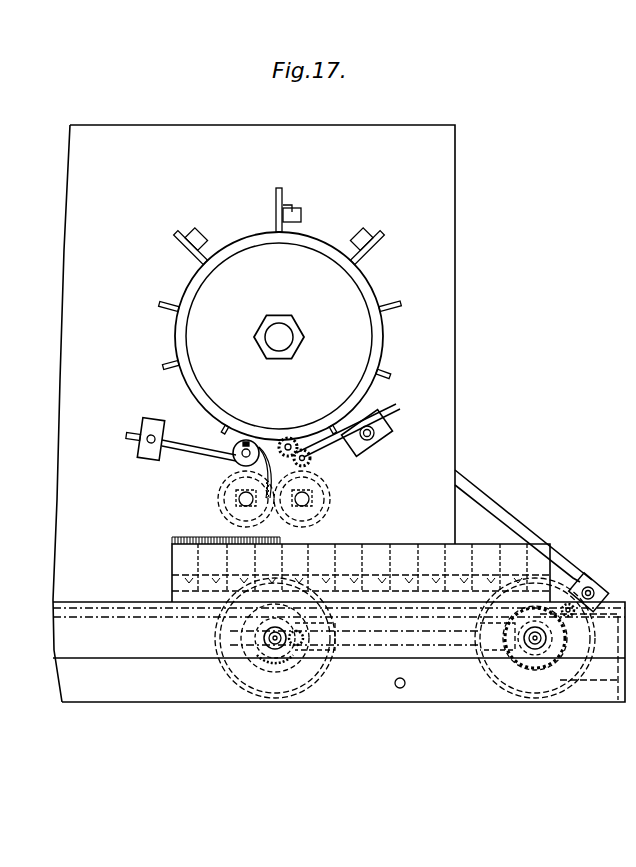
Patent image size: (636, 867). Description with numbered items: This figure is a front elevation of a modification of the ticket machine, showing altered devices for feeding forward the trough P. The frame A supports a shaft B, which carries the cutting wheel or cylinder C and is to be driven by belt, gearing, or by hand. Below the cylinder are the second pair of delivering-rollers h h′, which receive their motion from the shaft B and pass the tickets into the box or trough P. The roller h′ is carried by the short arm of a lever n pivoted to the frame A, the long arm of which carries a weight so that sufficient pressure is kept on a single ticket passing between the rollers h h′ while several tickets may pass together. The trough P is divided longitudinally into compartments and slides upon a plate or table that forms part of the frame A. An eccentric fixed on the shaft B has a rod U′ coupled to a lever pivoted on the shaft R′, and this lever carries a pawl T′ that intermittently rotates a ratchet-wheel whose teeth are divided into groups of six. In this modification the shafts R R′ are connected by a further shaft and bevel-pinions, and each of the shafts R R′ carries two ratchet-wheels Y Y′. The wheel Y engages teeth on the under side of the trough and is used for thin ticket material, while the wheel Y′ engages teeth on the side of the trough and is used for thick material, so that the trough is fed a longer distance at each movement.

The frame A is at (339, 413).
The cutting wheel or cylinder C is at (280, 330).
The shaft B is at (279, 336).
The lever n is at (199, 444).
The short arm n′ is at (236, 462).
The delivering-roller h′ is at (220, 500).
The delivering-roller h is at (331, 498).
The eccentric rod U′ is at (523, 526).
The pawl T′ is at (600, 588).
The box or trough P is at (361, 569).
The shaft R is at (289, 638).
The shaft R′ is at (523, 638).
The ratchet-wheel Y is at (275, 641).
The ratchet-wheel Y′ is at (322, 672).